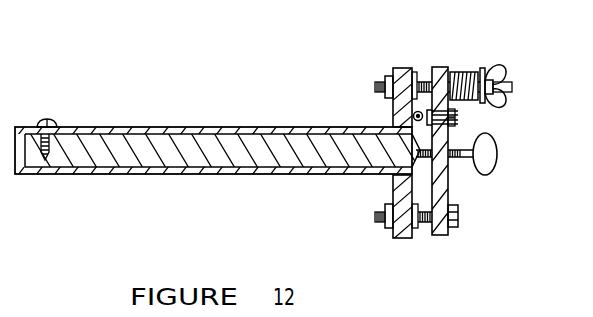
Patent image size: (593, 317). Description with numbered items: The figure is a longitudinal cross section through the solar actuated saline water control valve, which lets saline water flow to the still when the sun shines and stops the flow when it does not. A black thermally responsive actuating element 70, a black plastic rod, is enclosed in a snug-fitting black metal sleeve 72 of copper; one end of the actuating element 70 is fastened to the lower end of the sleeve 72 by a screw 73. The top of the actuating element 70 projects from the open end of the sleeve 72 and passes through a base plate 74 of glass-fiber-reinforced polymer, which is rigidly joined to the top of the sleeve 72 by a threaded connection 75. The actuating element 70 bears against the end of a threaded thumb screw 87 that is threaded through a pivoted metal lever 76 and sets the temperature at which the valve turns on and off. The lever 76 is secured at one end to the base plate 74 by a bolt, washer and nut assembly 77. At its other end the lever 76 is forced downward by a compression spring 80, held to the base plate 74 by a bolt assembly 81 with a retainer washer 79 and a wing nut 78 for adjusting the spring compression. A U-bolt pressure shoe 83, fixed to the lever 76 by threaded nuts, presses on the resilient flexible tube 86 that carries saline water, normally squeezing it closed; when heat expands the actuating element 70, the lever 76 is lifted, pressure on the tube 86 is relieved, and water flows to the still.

The thermally responsive actuating element 70 is at (118, 142).
The black metal sleeve 72 is at (203, 128).
The screw 73 is at (47, 119).
The base plate 74 is at (405, 68).
The threaded connection 75 is at (395, 177).
The pivoted metal lever 76 is at (448, 187).
The bolt, washer and nut assembly 77 is at (459, 224).
The wing nut 78 is at (499, 73).
The retainer washer 79 is at (482, 68).
The compression spring 80 is at (470, 71).
The bolt, washer and nut assembly 81 is at (387, 76).
The U bolt pressure shoe 83 is at (453, 112).
The resilient flexible tube 86 is at (413, 114).
The threaded thumb screw 87 is at (498, 162).